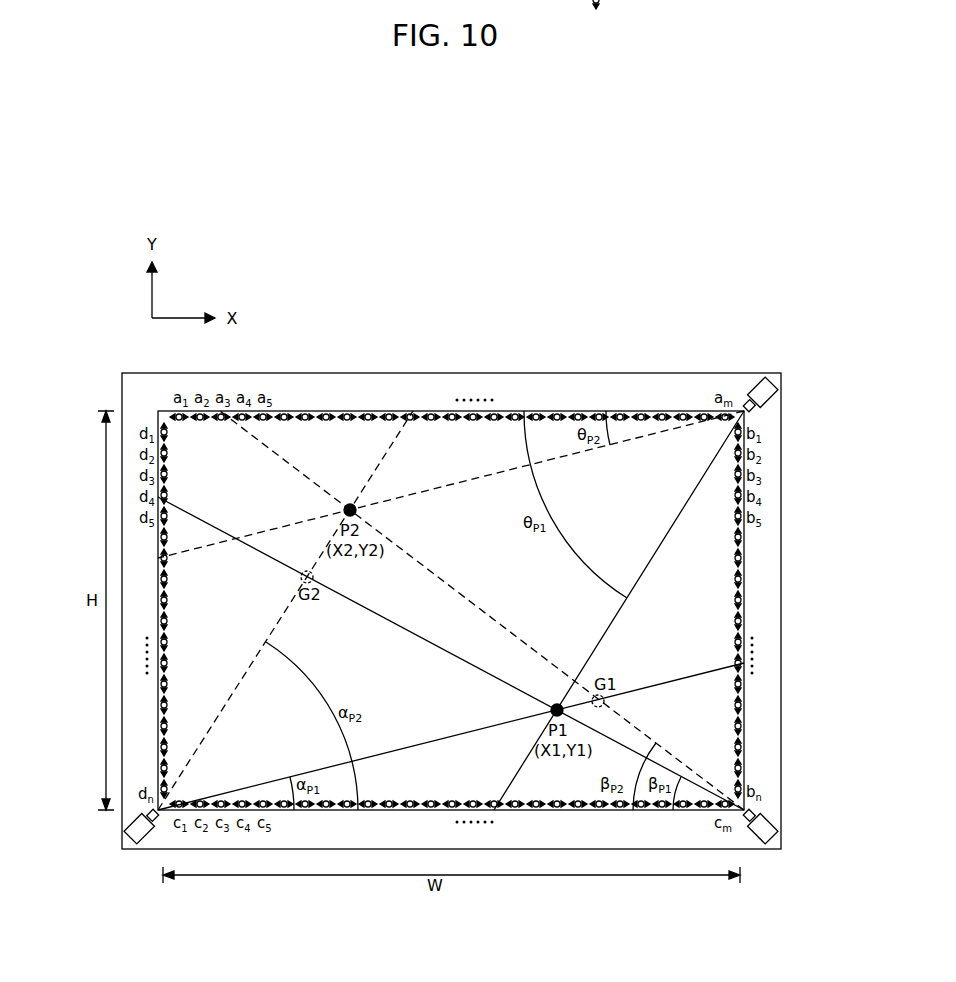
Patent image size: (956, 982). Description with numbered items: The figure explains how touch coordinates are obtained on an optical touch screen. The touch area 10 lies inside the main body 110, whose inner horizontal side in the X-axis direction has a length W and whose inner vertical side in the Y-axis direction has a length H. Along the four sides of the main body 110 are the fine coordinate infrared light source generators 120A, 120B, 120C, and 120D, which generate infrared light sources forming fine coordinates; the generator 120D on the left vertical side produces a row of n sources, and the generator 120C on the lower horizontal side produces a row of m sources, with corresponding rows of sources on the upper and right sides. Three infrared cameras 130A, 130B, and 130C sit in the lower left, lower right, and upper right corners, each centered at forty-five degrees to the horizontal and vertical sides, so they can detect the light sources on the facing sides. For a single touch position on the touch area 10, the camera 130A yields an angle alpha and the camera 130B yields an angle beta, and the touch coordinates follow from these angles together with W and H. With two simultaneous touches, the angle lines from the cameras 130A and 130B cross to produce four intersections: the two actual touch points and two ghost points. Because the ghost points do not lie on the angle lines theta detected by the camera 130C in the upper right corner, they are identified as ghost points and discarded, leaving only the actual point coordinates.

The touch area 10 is at (358, 430).
The main body 110 is at (286, 373).
The fine coordinate infrared light source generator 120A is at (524, 392).
The fine coordinate infrared light source generator 120B is at (757, 697).
The fine coordinate infrared light source generator 120C is at (553, 833).
The fine coordinate infrared light source generator 120D is at (143, 713).
The infrared camera 130A is at (141, 838).
The infrared camera 130B is at (765, 840).
The infrared camera 130C is at (757, 385).